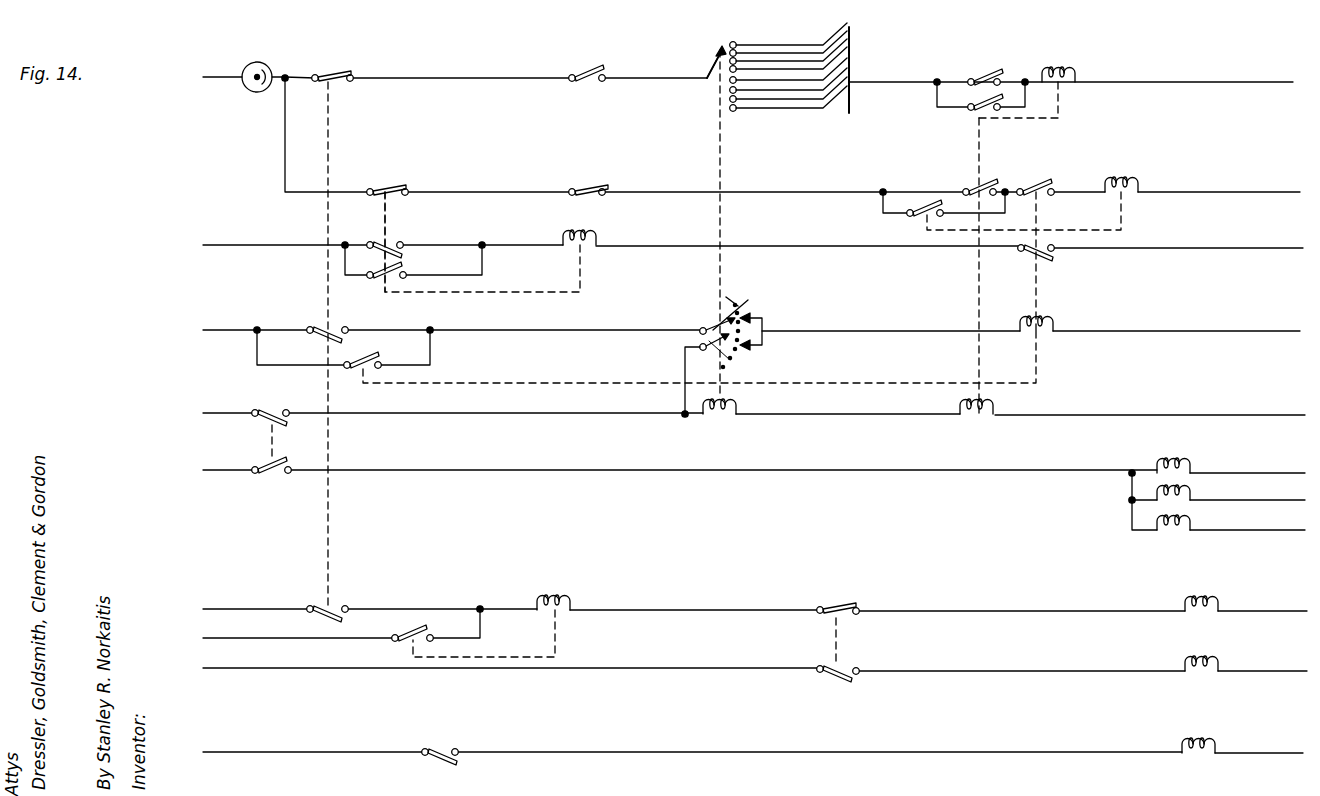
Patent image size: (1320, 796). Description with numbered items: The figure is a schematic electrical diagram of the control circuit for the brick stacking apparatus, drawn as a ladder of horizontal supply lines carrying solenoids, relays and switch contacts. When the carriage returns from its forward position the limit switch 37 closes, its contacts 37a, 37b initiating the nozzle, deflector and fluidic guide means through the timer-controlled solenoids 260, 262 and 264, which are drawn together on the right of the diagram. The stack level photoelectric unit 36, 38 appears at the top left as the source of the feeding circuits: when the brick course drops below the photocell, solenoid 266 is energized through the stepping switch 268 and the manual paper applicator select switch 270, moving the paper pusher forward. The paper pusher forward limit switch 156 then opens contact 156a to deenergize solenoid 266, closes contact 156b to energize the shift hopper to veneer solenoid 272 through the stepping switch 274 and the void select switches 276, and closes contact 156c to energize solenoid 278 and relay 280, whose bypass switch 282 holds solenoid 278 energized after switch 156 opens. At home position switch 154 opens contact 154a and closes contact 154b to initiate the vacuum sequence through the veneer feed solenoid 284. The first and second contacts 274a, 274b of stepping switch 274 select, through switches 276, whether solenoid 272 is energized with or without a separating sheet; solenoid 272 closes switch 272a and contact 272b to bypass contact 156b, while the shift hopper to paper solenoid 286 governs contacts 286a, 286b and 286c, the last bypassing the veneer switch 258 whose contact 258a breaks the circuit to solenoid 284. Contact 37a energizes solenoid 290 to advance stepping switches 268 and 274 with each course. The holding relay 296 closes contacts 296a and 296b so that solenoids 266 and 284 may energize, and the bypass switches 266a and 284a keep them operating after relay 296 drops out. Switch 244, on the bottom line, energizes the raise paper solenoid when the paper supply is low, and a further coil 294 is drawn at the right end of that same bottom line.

The photoelectric unit 36 is at (258, 58).
The photoelectric unit 38 is at (288, 45).
The contact 156a is at (346, 70).
The contact 286a is at (582, 72).
The stepping switch 268 is at (712, 60).
The manual paper applicator select switch 270 is at (780, 48).
The contact 296a is at (980, 74).
The bypass switch 266a is at (968, 112).
The solenoid 266 is at (1064, 70).
The paper pusher forward limit switch 156 is at (328, 128).
The contact 258a is at (398, 187).
The contact 286b is at (590, 187).
The contact 296b is at (966, 186).
The bypass switch 284a is at (916, 216).
The switch 272a is at (1034, 186).
The veneer feed solenoid 284 is at (1126, 178).
The switch 258 is at (385, 215).
The shift hopper to paper solenoid 286 is at (592, 232).
The contact 286c is at (380, 280).
The contact 272b is at (1058, 254).
The contact 156b is at (314, 324).
The shift hopper to veneer solenoid 272 is at (1050, 326).
The stepping switch 274 is at (694, 323).
The first contact 274a is at (749, 223).
The second contact 274b is at (732, 348).
The void select switches 276 is at (760, 320).
The contact 37a is at (266, 406).
The limit switch 37 is at (270, 440).
The contact 37b is at (268, 480).
The solenoid 290 is at (720, 420).
The holding relay 296 is at (975, 420).
The timer-controlled solenoid 260 is at (1180, 458).
The timer-controlled solenoid 262 is at (1130, 486).
The timer-controlled solenoid 264 is at (1174, 536).
The contact 156c is at (310, 606).
The relay 280 is at (555, 597).
The bypass switch 282 is at (396, 643).
The contact 154a is at (838, 604).
The switch 154 is at (836, 645).
The contact 154b is at (830, 686).
The solenoid 278 is at (1203, 598).
The relay coil 294 is at (1198, 738).
The switch 244 is at (440, 746).